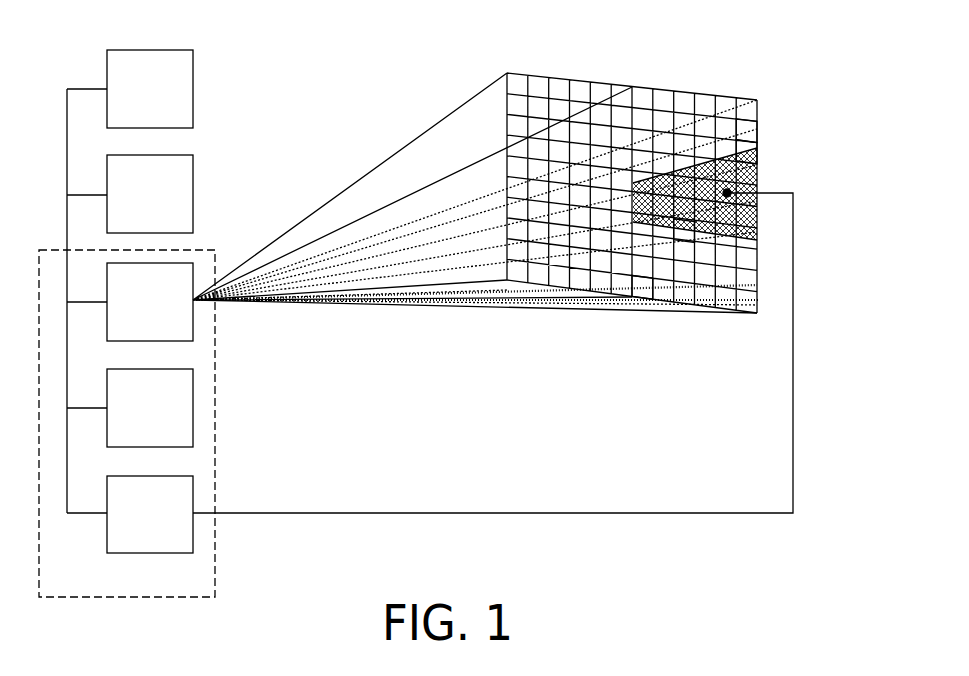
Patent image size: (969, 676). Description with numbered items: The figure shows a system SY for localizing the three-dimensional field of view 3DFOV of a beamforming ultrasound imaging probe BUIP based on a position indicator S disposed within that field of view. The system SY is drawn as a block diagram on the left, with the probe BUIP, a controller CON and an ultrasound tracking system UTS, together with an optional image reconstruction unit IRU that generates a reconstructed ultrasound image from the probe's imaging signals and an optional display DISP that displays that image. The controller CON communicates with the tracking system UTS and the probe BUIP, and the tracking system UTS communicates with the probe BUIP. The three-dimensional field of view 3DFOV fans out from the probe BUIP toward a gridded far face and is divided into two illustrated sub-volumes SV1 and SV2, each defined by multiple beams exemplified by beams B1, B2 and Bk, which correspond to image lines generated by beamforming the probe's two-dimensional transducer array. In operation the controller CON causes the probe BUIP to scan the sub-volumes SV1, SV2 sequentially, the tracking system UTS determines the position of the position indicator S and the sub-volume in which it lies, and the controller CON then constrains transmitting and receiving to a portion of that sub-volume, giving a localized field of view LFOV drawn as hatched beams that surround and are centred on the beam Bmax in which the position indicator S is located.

The display DISP is at (150, 89).
The image reconstruction unit IRU is at (150, 194).
The beamforming ultrasound imaging probe BUIP is at (150, 302).
The controller CON is at (150, 408).
The ultrasound tracking system UTS is at (150, 514).
The system SY is at (215, 573).
The three-dimensional field of view 3DFOV is at (408, 147).
The sub-volume SV2 is at (537, 112).
The sub-volume SV1 is at (643, 120).
The beam B1 is at (750, 118).
The beam B2 is at (750, 142).
The localized field of view LFOV is at (750, 166).
The position indicator S is at (743, 187).
The beam Bk is at (643, 290).
The beam in which the position sensor is located Bmax is at (683, 220).